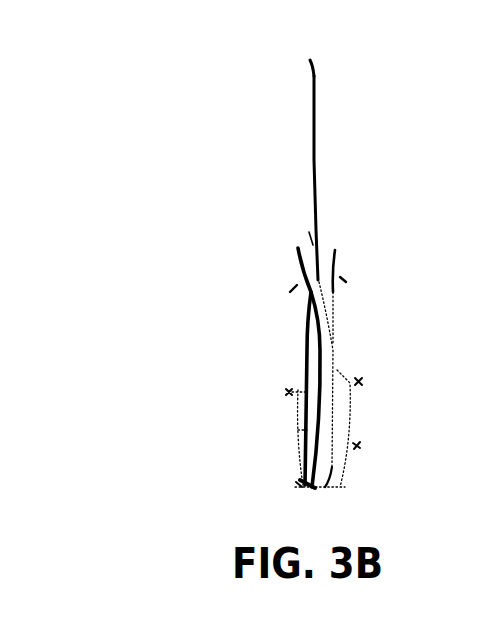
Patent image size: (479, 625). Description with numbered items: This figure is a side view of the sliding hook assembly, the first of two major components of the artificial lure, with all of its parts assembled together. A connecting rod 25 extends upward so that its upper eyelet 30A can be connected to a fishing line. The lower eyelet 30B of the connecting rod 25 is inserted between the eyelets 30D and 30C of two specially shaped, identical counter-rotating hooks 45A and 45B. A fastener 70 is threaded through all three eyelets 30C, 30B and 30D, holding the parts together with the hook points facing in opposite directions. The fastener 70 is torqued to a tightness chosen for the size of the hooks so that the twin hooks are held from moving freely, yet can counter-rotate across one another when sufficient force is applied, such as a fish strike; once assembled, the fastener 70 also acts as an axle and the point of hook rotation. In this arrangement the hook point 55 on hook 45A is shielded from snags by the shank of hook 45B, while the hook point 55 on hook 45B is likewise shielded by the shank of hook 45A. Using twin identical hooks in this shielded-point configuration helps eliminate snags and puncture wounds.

The connecting rod 25 is at (315, 143).
The eyelet 30A is at (303, 50).
The eyelet 30B is at (309, 230).
The eyelet 30C is at (337, 247).
The eyelet 30D is at (292, 247).
The fastener 70 is at (290, 292).
The hook point 55 is at (285, 392).
The counter-rotating hook 45A is at (362, 450).
The counter-rotating hook 45B is at (297, 485).